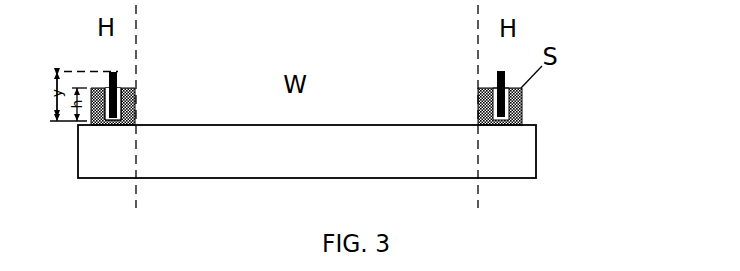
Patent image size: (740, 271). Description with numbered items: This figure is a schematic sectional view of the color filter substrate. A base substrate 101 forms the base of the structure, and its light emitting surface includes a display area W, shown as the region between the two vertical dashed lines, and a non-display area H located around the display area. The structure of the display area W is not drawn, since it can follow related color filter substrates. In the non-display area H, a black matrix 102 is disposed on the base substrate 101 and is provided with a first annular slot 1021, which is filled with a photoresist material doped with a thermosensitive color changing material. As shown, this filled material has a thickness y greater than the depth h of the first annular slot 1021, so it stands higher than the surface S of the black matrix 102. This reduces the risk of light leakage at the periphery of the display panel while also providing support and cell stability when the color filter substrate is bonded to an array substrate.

The base substrate 101 is at (537, 153).
The black matrix 102 is at (522, 108).
The first annular slot 1021 is at (122, 109).